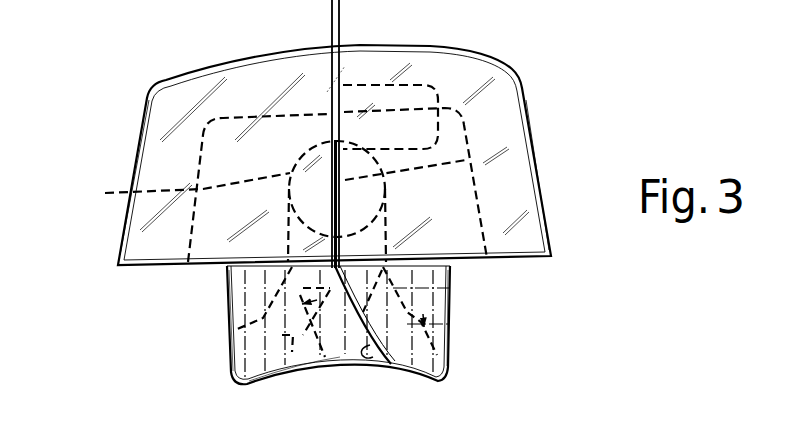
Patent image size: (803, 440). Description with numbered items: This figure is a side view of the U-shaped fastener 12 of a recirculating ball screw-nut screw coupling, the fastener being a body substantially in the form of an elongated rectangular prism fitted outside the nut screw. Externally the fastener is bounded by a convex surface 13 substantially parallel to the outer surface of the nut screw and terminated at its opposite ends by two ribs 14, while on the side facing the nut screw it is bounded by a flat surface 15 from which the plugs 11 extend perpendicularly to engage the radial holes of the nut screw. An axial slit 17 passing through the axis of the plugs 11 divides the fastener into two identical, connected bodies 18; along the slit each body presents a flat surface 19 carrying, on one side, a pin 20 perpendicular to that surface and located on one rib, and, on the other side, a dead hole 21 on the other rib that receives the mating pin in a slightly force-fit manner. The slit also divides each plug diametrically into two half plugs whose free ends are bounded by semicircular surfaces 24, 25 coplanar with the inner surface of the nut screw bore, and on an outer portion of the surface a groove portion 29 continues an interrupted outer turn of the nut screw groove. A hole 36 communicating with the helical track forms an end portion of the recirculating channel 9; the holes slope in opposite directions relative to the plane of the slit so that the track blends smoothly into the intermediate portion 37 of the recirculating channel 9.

The recirculating channel 9 is at (505, 147).
The plug 11 is at (373, 325).
The U-shaped fastener 12 is at (531, 52).
The convex surface 13 is at (289, 108).
The rib 14 is at (479, 86).
The flat surface 15 is at (201, 268).
The axial slit 17 is at (341, 56).
The body 18 is at (142, 124).
The flat surface 19 is at (328, 90).
The pin 20 is at (405, 40).
The dead hole 21 is at (440, 82).
The semicircular surface 24 is at (403, 371).
The semicircular surface 25 is at (281, 380).
The groove portion 29 is at (293, 335).
The hole 36 is at (237, 378).
The intermediate portion 37 is at (275, 185).